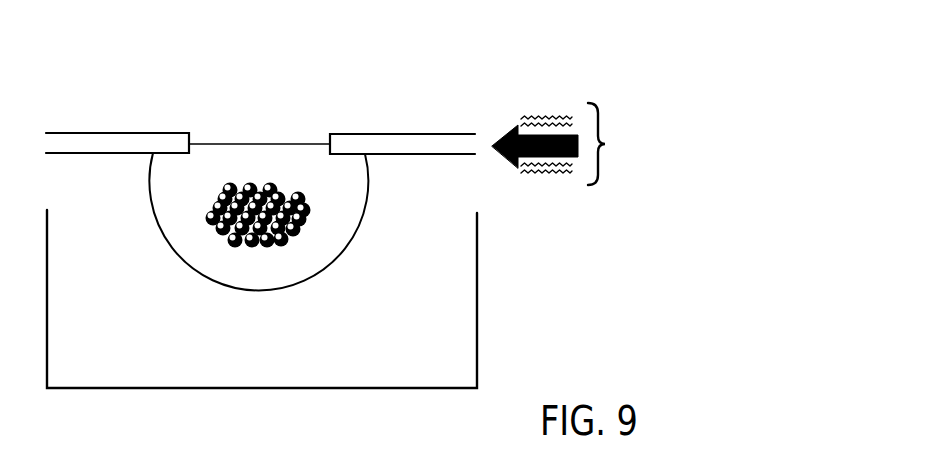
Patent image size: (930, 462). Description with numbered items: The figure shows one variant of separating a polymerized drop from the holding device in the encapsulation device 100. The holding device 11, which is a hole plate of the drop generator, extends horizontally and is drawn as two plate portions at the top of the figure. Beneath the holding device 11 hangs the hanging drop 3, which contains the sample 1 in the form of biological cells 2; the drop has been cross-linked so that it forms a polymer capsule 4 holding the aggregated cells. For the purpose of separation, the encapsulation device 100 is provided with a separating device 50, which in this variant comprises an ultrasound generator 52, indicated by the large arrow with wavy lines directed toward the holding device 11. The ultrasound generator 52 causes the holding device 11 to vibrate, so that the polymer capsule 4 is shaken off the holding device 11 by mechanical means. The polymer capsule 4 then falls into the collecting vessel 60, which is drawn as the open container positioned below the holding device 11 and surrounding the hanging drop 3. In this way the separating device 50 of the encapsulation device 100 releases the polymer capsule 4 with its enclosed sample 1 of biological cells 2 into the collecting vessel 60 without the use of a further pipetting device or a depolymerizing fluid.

The sample 1 is at (200, 239).
The biological cells 2 is at (222, 224).
The hanging drop 3 is at (310, 221).
The polymer capsule 4 is at (358, 228).
The holding device 11 is at (120, 144).
The separating device 50 is at (564, 114).
The ultrasound generator 52 is at (542, 122).
The collecting vessel 60 is at (477, 300).
The encapsulation device 100 is at (638, 190).